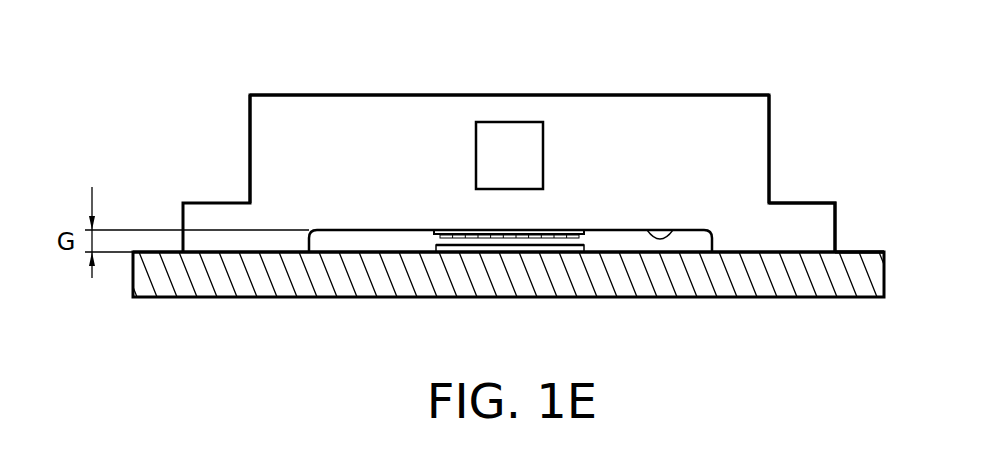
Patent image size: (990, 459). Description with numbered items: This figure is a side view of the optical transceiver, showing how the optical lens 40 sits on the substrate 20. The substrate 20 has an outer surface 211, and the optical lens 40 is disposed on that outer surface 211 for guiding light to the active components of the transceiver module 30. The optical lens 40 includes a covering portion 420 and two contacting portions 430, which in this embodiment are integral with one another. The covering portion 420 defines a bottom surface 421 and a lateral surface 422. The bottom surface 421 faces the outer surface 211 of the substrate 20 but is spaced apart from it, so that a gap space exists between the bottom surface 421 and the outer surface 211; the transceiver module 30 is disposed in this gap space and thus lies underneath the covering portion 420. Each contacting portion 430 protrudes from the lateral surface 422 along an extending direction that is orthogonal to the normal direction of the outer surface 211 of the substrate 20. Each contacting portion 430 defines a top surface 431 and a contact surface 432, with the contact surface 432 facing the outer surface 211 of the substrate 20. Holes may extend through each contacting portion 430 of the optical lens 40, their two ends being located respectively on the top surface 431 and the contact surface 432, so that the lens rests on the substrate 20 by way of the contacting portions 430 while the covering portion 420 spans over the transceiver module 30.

The substrate 20 is at (694, 300).
The outer surface 211 is at (868, 251).
The transceiver module 30 is at (512, 245).
The optical lens 40 is at (288, 92).
The covering portion 420 is at (387, 127).
The bottom surface 421 is at (673, 230).
The lateral surface 422 is at (250, 150).
The contacting portion 430 is at (840, 207).
The top surface 431 is at (800, 200).
The contact surface 432 is at (815, 253).